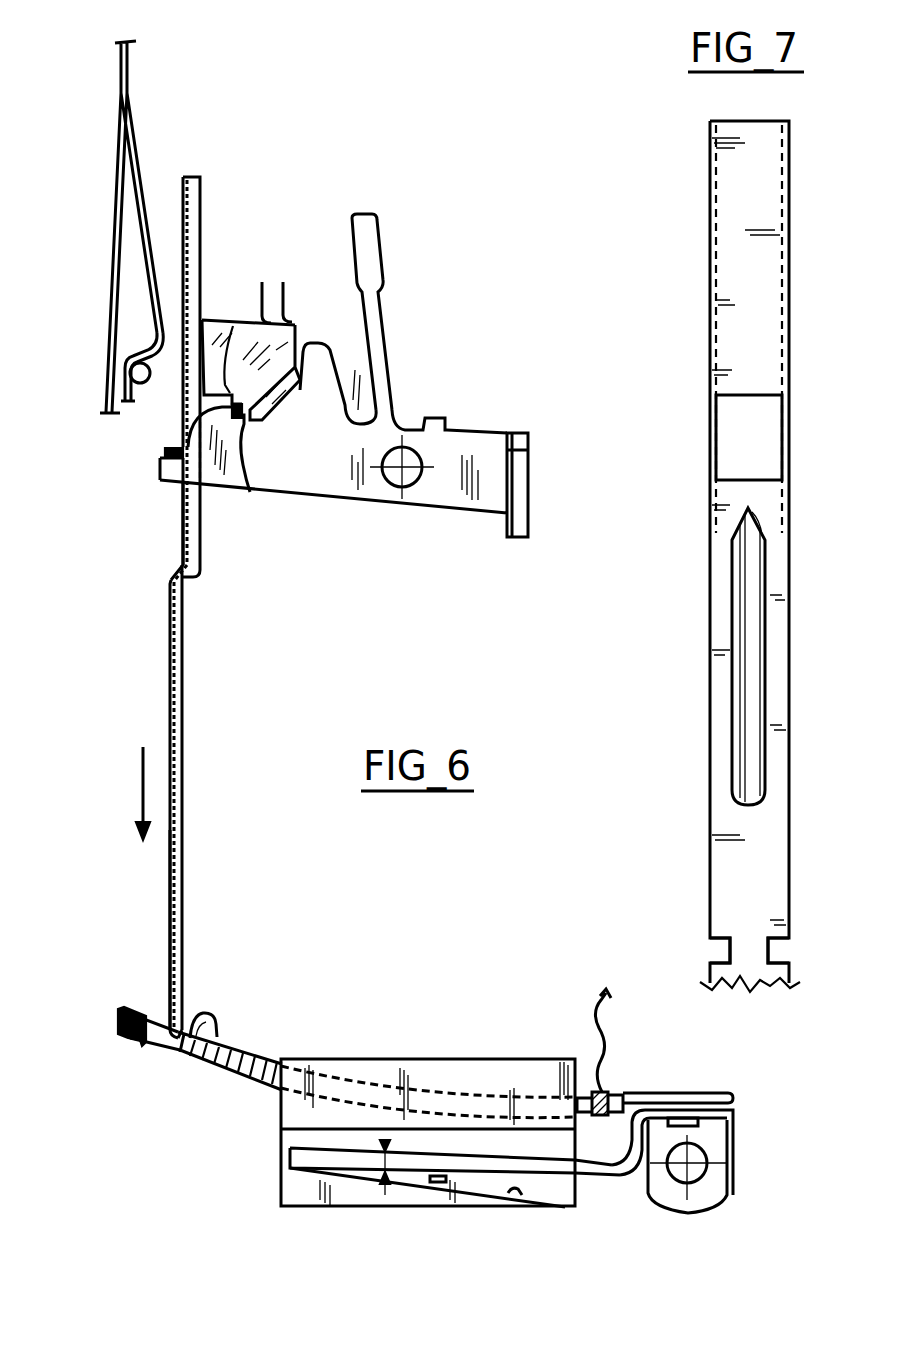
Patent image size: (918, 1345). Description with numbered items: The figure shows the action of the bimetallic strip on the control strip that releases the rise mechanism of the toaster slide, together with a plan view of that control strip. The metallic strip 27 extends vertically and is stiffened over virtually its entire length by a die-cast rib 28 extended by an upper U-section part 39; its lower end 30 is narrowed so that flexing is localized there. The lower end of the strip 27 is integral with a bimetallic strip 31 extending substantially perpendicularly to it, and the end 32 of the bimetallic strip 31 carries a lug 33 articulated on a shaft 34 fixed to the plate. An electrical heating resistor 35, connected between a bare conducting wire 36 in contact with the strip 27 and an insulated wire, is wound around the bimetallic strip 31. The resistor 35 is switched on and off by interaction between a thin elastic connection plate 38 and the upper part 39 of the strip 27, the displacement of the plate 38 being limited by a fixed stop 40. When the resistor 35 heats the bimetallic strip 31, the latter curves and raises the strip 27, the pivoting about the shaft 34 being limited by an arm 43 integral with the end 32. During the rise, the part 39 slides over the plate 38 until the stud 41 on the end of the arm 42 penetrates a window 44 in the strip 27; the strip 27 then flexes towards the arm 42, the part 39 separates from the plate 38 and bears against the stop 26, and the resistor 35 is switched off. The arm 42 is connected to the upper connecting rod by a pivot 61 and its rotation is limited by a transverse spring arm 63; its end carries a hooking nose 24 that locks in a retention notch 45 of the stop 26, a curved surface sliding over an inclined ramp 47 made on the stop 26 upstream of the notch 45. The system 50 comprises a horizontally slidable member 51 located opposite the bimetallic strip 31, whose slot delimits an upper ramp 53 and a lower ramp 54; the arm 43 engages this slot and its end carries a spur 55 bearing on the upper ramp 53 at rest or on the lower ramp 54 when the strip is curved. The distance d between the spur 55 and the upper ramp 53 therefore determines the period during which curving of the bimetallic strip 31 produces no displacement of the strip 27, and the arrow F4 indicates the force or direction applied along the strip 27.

In FIG. 6, the nose 24 is at (250, 492).
In FIG. 6, the stop 26 is at (283, 343).
In FIG. 6, the metallic strip 27 is at (180, 916).
In FIG. 7, the metallic strip 27 is at (768, 850).
In FIG. 6, the die-cast rib 28 is at (178, 718).
In FIG. 7, the die-cast rib 28 is at (755, 690).
In FIG. 6, the lower end of the strip 30 is at (180, 1012).
In FIG. 7, the lower end of the strip 30 is at (762, 950).
In FIG. 6, the bimetallic strip 31 is at (178, 1050).
In FIG. 6, the end of the bimetallic strip 32 is at (700, 1100).
In FIG. 6, the lug 33 is at (672, 1200).
In FIG. 6, the shaft 34 is at (695, 1170).
In FIG. 6, the electrical heating resistor 35 is at (238, 1072).
In FIG. 6, the bare conducting wire 36 is at (208, 1023).
In FIG. 6, the thin elastic connection plate 38 is at (150, 186).
In FIG. 6, the upper U-section part 39 is at (205, 230).
In FIG. 7, the upper U-section part 39 is at (764, 233).
In FIG. 6, the fixed stop 40 is at (128, 370).
In FIG. 6, the stud 41 is at (160, 470).
In FIG. 6, the arm 42 is at (344, 492).
In FIG. 6, the arm 43 is at (487, 1180).
In FIG. 6, the window 44 is at (185, 503).
In FIG. 7, the window 44 is at (760, 437).
In FIG. 6, the retention notch 45 is at (236, 323).
In FIG. 6, the inclined ramp 47 is at (290, 405).
In FIG. 6, the system 50 is at (306, 1182).
In FIG. 6, the member 51 is at (416, 1068).
In FIG. 6, the upper ramp 53 is at (478, 1156).
In FIG. 6, the lower ramp 54 is at (514, 1193).
In FIG. 6, the spur 55 is at (436, 1184).
In FIG. 6, the pivot 61 is at (412, 480).
In FIG. 6, the spring arm 63 is at (380, 318).
In FIG. 6, the force F4 is at (140, 784).
In FIG. 6, the distance d is at (382, 1162).